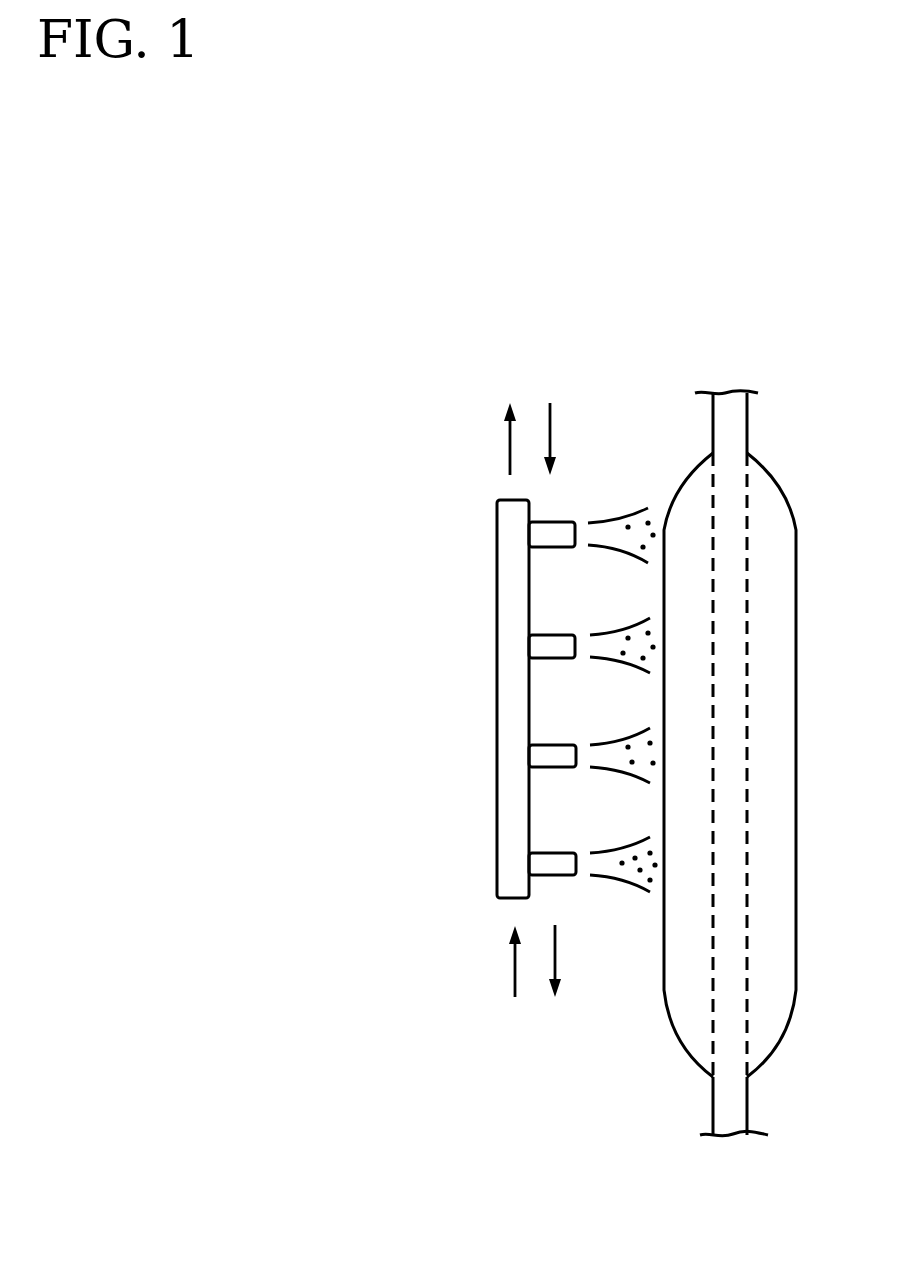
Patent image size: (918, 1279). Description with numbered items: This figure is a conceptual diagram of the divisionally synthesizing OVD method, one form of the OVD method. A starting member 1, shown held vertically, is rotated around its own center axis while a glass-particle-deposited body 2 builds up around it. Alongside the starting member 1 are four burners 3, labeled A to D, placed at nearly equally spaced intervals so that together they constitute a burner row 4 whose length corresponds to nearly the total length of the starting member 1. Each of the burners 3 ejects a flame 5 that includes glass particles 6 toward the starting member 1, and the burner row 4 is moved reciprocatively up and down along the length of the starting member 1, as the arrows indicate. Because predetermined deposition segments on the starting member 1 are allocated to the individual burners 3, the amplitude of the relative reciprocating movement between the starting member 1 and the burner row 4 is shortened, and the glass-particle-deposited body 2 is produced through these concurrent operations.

The starting member 1 is at (745, 422).
The glass-particle-deposited body 2 is at (797, 608).
The burners 3 is at (568, 520).
The burner row 4 is at (495, 513).
The flame 5 is at (625, 518).
The glass particles 6 is at (638, 873).